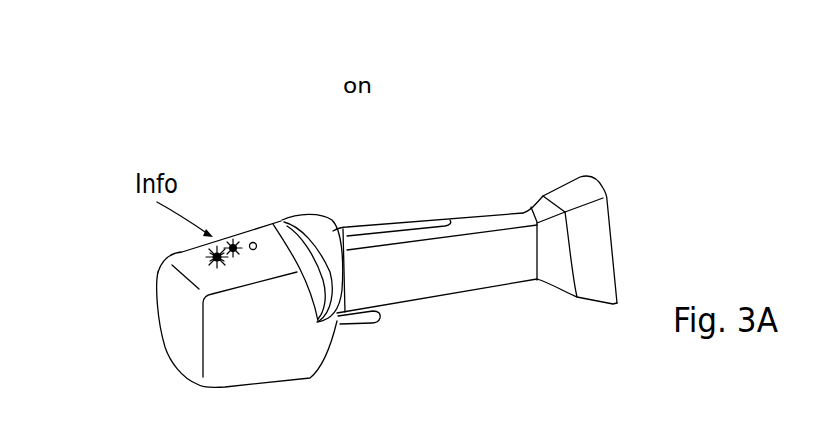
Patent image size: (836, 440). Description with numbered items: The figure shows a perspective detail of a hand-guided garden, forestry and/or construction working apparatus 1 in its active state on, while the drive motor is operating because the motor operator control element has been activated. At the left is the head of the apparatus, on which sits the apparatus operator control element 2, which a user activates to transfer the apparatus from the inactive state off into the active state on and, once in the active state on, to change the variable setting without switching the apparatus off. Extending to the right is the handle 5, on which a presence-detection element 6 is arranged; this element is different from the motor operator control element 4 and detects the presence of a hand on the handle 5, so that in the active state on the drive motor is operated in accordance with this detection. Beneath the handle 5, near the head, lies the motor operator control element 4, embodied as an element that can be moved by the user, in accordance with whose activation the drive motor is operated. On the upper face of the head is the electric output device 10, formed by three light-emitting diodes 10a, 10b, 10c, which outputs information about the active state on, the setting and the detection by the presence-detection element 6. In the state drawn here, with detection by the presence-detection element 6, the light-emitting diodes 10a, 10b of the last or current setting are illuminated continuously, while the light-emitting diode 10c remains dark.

The garden, forestry and/or construction working apparatus 1 is at (537, 138).
The apparatus operator control element 2 is at (288, 217).
The motor operator control element 4 is at (360, 318).
The handle 5 is at (505, 267).
The presence-detection element 6 is at (427, 218).
The output device 10 is at (181, 197).
The light-emitting diode 10a is at (210, 254).
The light-emitting diode 10b is at (234, 245).
The light-emitting diode 10c is at (256, 243).